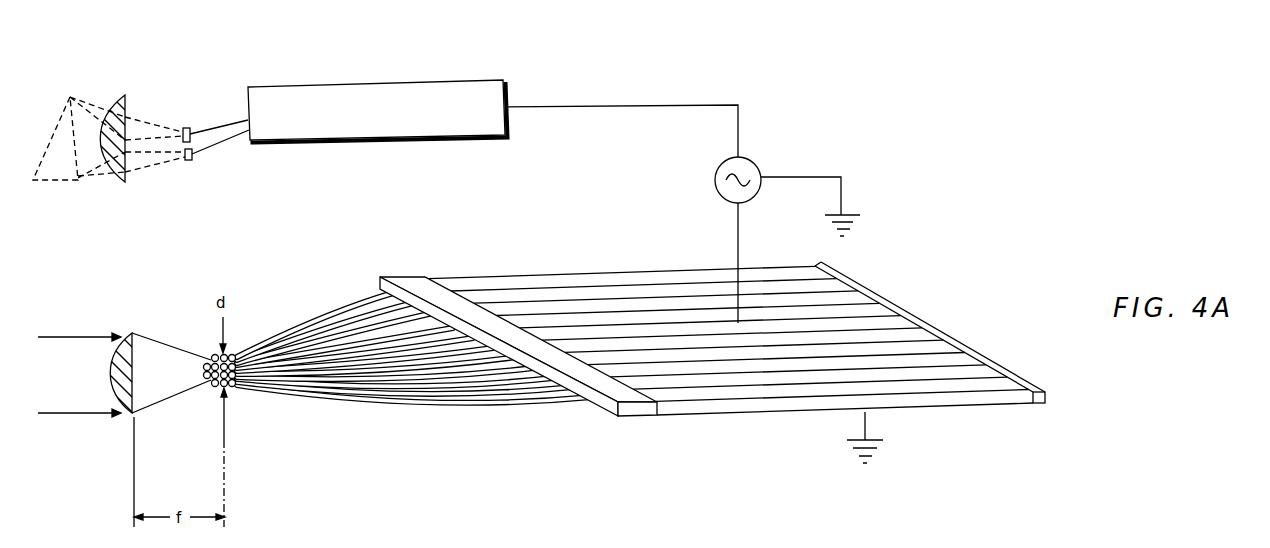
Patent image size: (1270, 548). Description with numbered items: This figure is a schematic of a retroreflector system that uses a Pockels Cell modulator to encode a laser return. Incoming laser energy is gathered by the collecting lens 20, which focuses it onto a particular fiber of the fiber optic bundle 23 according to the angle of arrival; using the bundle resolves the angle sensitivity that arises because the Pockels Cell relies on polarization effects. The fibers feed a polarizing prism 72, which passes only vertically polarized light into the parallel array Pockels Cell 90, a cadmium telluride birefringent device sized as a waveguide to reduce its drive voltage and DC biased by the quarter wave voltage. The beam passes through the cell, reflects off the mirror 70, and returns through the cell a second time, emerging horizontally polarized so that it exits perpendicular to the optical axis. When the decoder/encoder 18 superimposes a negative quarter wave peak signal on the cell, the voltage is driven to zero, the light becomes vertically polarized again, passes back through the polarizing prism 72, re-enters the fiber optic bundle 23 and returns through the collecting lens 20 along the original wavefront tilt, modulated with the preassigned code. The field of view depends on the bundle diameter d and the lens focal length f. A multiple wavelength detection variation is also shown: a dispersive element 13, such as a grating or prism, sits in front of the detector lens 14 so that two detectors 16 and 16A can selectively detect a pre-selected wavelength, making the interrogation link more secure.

The dispersive element 13 is at (66, 110).
The detector lens 14 is at (117, 101).
The detector 16 is at (188, 128).
The detector 16A is at (190, 161).
The decoder/encoder 18 is at (488, 121).
The collecting lens 20 is at (133, 357).
The fiber optic bundle 23 is at (520, 459).
The mirror 70 is at (1133, 472).
The polarizing prism 72 is at (632, 416).
The parallel array Pockels Cell 90 is at (498, 278).